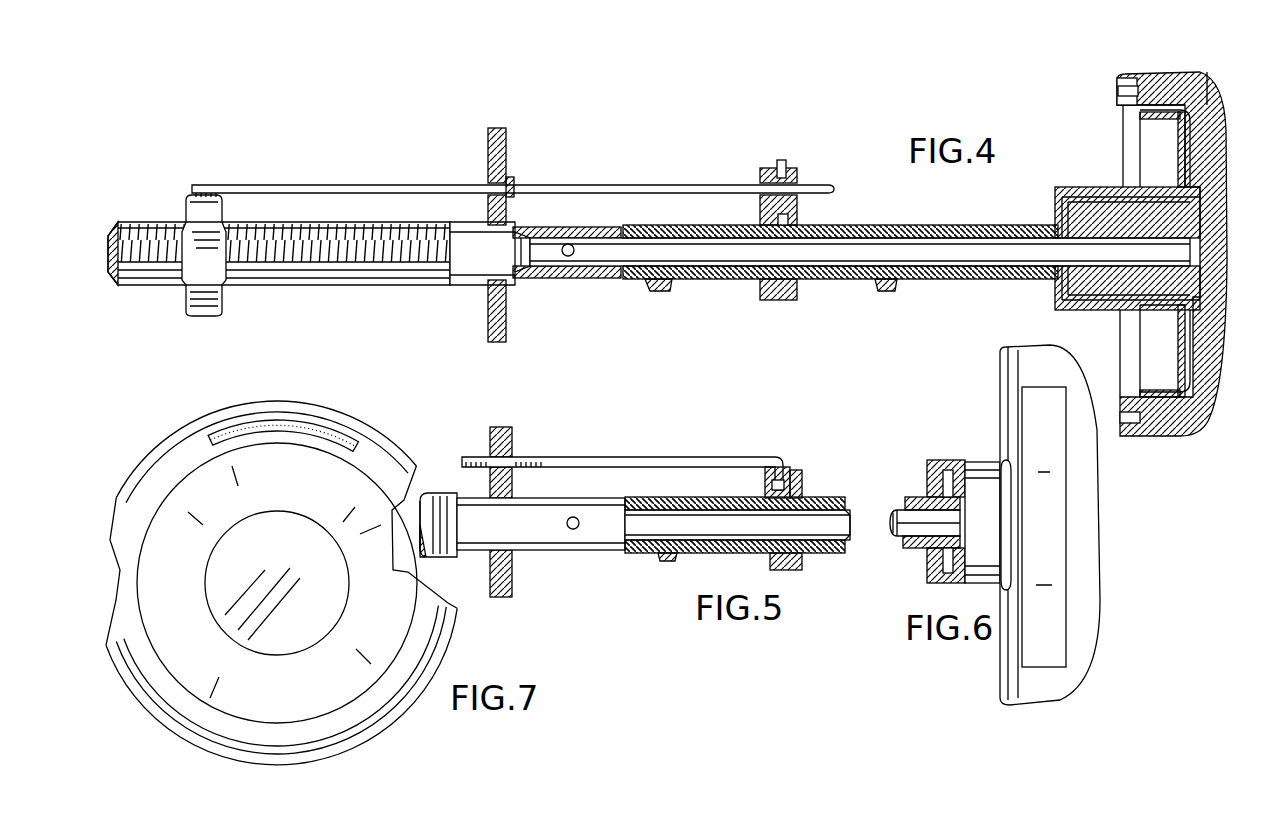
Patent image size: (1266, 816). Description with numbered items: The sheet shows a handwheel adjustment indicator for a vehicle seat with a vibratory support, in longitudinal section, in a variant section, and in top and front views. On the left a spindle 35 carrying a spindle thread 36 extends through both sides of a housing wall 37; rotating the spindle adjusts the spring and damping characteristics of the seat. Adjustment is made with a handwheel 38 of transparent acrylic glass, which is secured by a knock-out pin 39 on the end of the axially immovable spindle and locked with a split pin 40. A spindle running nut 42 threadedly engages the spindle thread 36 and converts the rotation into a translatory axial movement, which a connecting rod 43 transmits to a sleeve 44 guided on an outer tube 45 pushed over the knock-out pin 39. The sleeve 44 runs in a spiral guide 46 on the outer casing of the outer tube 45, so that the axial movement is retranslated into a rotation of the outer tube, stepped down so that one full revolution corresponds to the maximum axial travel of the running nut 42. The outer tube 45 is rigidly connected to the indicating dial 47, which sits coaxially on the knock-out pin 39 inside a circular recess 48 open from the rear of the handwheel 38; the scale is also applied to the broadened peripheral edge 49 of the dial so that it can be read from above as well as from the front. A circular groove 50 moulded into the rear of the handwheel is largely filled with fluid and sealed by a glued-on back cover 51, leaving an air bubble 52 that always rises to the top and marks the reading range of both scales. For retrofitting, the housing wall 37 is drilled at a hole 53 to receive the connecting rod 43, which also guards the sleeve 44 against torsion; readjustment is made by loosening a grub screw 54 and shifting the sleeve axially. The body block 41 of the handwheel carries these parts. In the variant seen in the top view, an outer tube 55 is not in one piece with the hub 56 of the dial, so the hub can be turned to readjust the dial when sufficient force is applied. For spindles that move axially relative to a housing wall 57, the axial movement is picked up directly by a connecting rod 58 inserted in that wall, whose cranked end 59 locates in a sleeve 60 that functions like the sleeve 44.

In FIG. 4, the spindle 35 is at (468, 240).
In FIG. 4, the spindle thread 36 is at (264, 236).
In FIG. 4, the housing wall 37 is at (488, 166).
In FIG. 4, the handwheel 38 is at (1193, 86).
In FIG. 4, the knock-out pin 39 is at (657, 250).
In FIG. 4, the split pin 40 is at (572, 246).
In FIG. 4, the handle body block 41 is at (1070, 240).
In FIG. 4, the spindle running nut 42 is at (205, 206).
In FIG. 4, the connecting rod 43 is at (325, 185).
In FIG. 4, the sleeve 44 is at (766, 182).
In FIG. 4, the outer tube 45 is at (890, 225).
In FIG. 4, the spiral guide 46 is at (893, 292).
In FIG. 4, the indicating dial 47 is at (1180, 150).
In FIG. 7, the indicating dial 47 is at (330, 475).
In FIG. 4, the circular recess 48 is at (1183, 135).
In FIG. 4, the broadened peripheral edge 49 is at (1166, 100).
In FIG. 4, the circular groove 50 is at (1127, 80).
In FIG. 6, the circular groove 50 is at (1008, 360).
In FIG. 4, the back cover 51 is at (1122, 90).
In FIG. 6, the air bubble 52 is at (1005, 455).
In FIG. 7, the air bubble 52 is at (312, 432).
In FIG. 4, the hole 53 is at (512, 180).
In FIG. 4, the grub screw 54 is at (783, 166).
In FIG. 6, the outer tube 55 is at (906, 500).
In FIG. 6, the hub 56 is at (936, 462).
In FIG. 5, the housing wall 57 is at (504, 428).
In FIG. 5, the connecting rod 58 is at (597, 457).
In FIG. 5, the cranked end 59 is at (778, 468).
In FIG. 5, the sleeve 60 is at (800, 470).